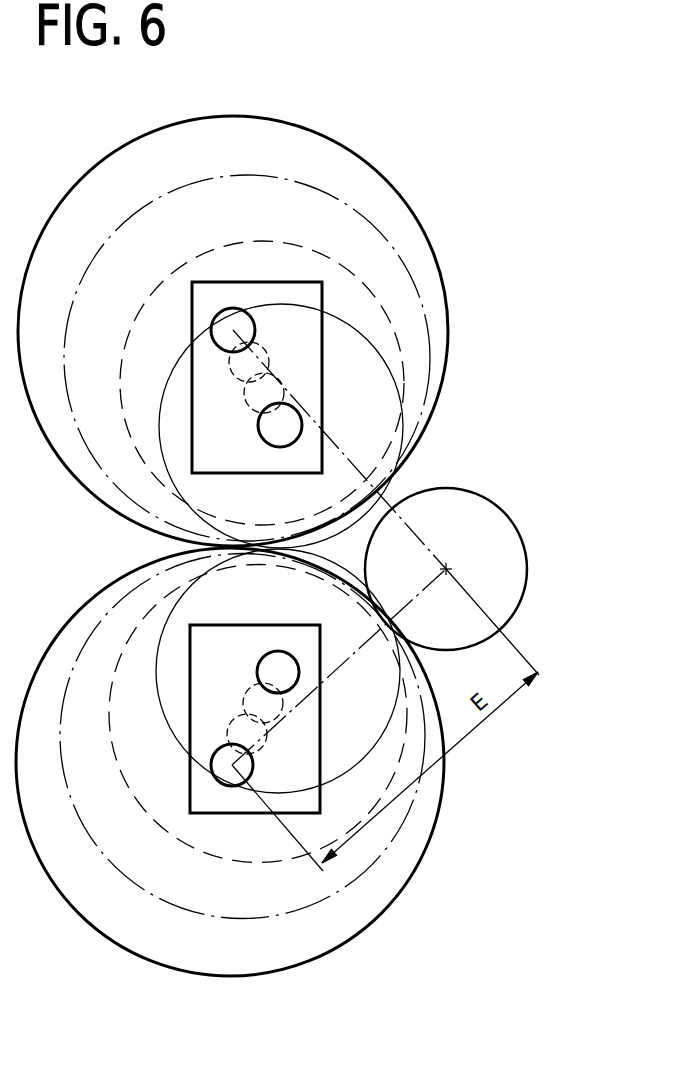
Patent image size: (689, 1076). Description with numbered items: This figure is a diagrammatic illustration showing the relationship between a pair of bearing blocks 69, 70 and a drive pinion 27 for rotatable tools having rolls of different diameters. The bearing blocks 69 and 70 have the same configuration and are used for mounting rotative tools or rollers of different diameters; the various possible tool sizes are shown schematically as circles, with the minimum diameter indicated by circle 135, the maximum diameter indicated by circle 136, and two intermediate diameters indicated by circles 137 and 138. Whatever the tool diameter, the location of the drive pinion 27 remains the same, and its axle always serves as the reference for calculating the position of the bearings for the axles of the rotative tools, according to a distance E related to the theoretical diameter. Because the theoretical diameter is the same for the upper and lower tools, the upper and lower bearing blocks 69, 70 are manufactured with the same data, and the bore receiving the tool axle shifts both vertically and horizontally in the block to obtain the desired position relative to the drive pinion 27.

The bearing block 70 is at (290, 385).
The drive pinion 27 is at (500, 551).
The bearing block 69 is at (305, 653).
The circle indicating minimum diameter 135 is at (388, 722).
The circle indicating maximum diameter 136 is at (430, 848).
The circle indicating intermediate diameter 137 is at (410, 810).
The circle indicating intermediate diameter 138 is at (270, 866).